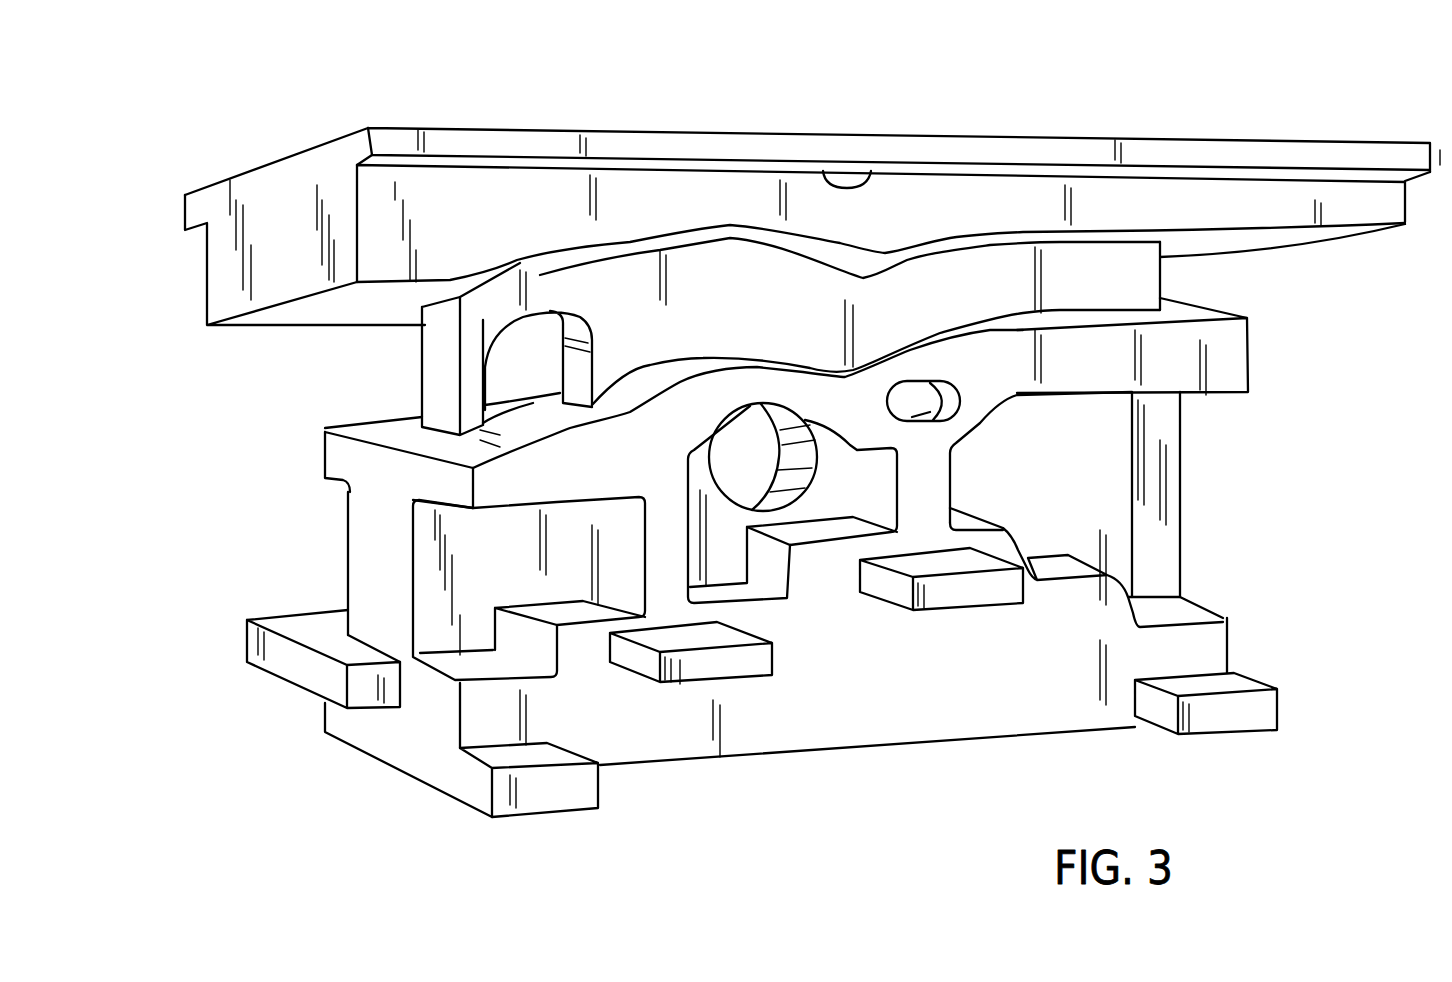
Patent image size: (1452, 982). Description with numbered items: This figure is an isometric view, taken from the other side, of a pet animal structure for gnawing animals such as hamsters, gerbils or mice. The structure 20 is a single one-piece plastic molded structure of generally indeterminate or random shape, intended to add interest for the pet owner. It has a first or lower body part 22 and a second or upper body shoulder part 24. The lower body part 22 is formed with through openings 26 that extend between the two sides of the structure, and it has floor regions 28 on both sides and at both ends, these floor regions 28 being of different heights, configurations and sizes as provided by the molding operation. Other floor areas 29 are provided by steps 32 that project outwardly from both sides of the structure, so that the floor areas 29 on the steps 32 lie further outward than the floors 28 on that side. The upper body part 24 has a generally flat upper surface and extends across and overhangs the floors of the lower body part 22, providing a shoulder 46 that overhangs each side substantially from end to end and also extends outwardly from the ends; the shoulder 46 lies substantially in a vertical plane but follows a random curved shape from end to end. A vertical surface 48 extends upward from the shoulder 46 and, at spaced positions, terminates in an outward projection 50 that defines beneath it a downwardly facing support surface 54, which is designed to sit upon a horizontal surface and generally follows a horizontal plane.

The plastic molded structure 20 is at (1290, 486).
The lower body part 22 is at (320, 487).
The upper body shoulder part 24 is at (475, 118).
The through openings 26 is at (520, 363).
The floor regions 28 is at (363, 422).
The floor areas 29 is at (295, 622).
The steps 32 is at (288, 667).
The shoulder 46 is at (260, 308).
The vertical surface 48 is at (660, 193).
The outward projection 50 is at (558, 145).
The downwardly facing support surface 54 is at (872, 171).